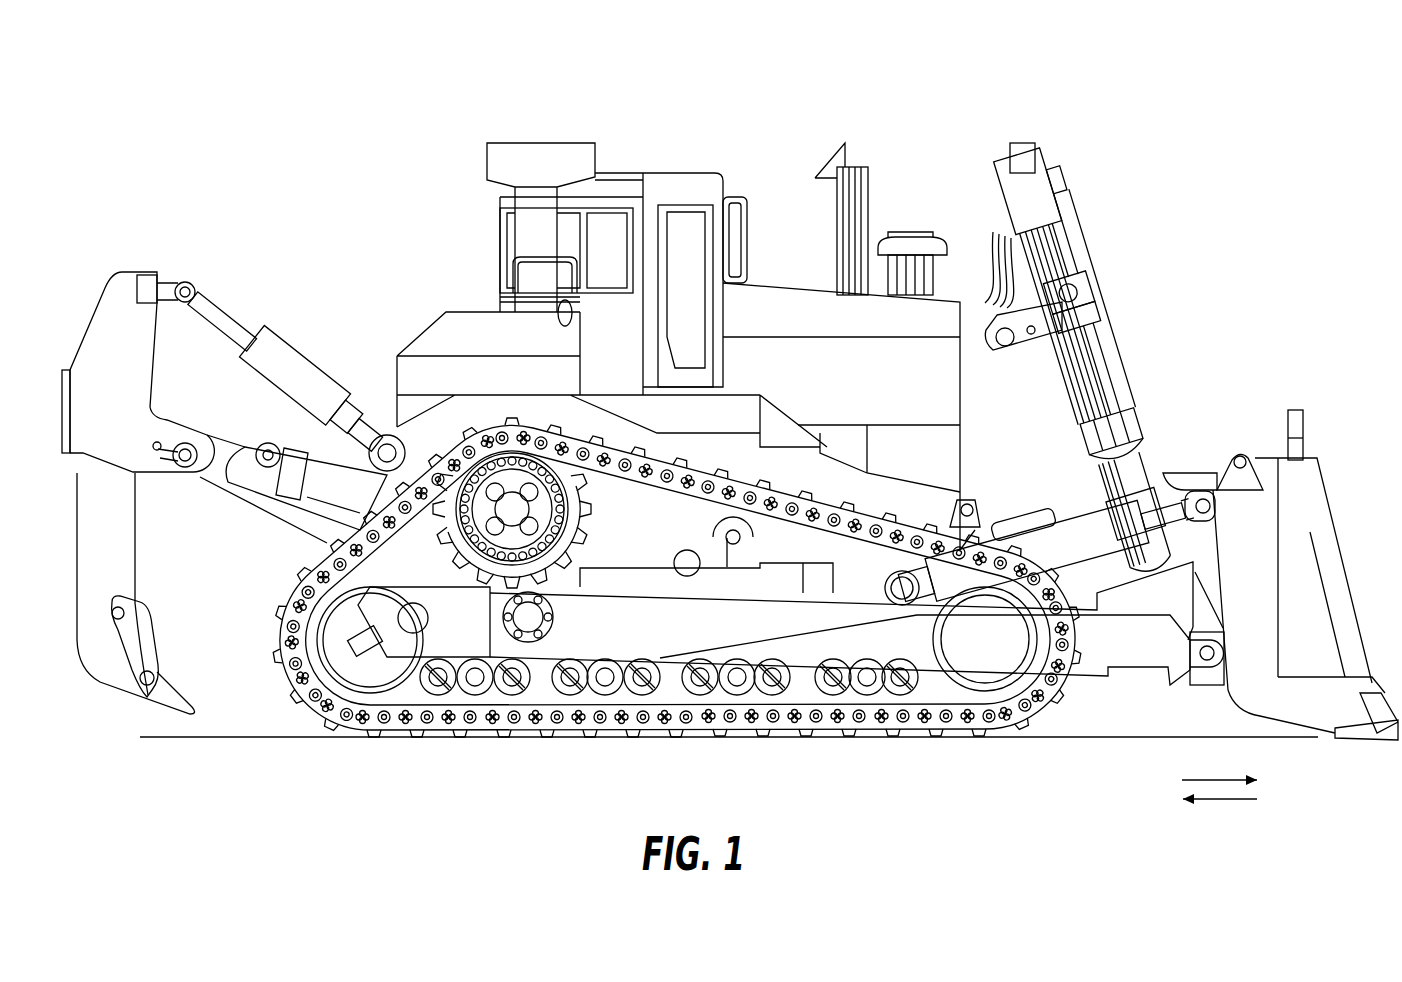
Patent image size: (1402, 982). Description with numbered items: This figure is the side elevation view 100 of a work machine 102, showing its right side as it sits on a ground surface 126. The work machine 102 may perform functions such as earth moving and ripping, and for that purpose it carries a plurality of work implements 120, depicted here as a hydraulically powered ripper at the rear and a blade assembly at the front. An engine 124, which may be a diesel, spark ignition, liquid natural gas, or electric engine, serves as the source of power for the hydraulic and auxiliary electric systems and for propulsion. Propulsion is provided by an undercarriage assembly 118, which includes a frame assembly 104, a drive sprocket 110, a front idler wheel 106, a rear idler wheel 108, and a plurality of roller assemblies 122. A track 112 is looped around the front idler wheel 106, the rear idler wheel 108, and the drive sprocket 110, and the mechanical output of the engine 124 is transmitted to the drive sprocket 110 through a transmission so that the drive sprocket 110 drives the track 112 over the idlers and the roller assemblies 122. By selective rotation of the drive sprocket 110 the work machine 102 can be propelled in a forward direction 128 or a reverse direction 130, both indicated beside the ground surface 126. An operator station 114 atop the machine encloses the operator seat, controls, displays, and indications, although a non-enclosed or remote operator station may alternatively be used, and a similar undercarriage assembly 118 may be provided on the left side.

The side elevation view 100 is at (260, 135).
The work machine 102 is at (990, 118).
The frame assembly 104 is at (722, 575).
The front idler wheel 106 is at (975, 670).
The rear idler wheel 108 is at (358, 665).
The drive sprocket 110 is at (542, 512).
The track 112 is at (610, 720).
The operator station 114 is at (608, 218).
The undercarriage assembly 118 is at (427, 565).
The work implements 120 is at (238, 303).
The roller assemblies 122 is at (512, 690).
The engine 124 is at (822, 360).
The ground surface 126 is at (138, 746).
The forward direction 128 is at (1220, 780).
The reverse direction 130 is at (1220, 799).